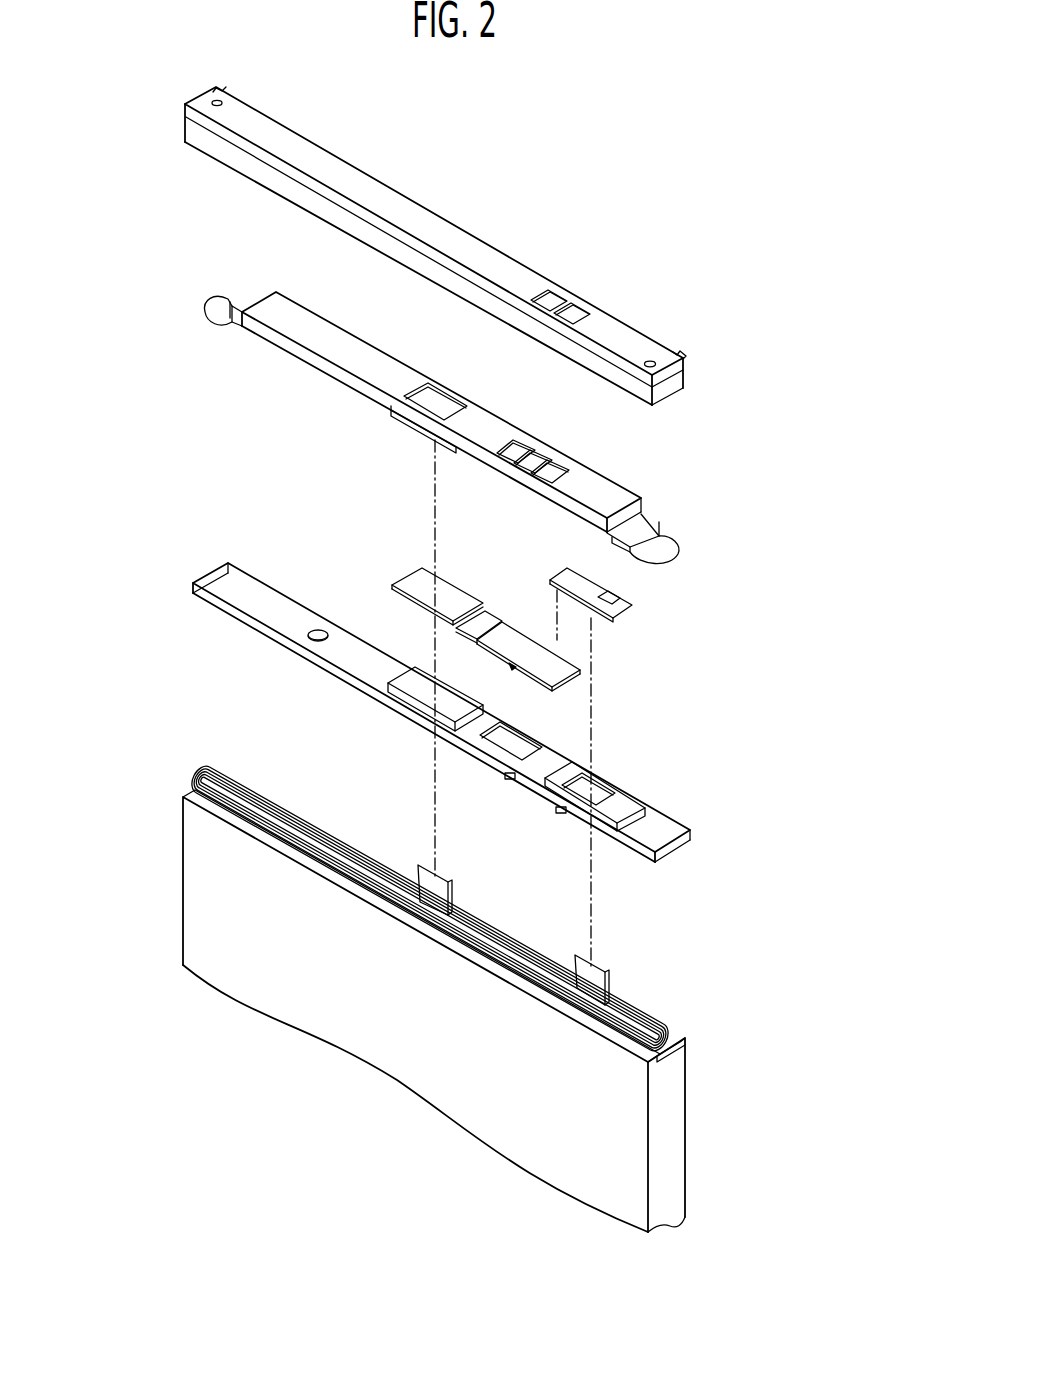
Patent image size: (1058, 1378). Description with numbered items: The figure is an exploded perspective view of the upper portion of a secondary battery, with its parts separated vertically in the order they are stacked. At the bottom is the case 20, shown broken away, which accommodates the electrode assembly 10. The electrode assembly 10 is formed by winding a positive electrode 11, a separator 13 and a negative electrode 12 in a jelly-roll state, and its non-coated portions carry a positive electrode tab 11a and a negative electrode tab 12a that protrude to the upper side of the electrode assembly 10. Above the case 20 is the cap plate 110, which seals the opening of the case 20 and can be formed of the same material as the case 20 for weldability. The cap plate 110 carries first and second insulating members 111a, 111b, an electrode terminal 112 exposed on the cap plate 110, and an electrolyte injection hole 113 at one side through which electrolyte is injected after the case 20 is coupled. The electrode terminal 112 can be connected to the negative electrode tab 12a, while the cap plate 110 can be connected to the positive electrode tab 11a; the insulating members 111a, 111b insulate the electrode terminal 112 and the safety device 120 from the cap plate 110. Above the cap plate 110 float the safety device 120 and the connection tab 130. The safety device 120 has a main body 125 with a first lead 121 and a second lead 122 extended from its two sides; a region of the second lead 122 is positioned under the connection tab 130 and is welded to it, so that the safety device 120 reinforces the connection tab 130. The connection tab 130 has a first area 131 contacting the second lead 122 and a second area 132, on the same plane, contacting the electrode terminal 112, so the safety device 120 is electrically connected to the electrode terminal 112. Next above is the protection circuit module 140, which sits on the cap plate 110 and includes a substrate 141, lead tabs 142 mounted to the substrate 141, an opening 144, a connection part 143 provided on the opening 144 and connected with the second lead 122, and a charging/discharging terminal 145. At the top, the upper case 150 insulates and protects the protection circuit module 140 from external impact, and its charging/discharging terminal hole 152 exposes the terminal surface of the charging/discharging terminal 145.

The electrode assembly 10 is at (489, 924).
The positive electrode 11 is at (672, 1022).
The positive electrode tab 11a is at (438, 890).
The negative electrode 12 is at (672, 1038).
The negative electrode tab 12a is at (596, 978).
The separator 13 is at (672, 1030).
The case 20 is at (677, 1160).
The cap plate 110 is at (477, 709).
The first insulating member 111a is at (623, 775).
The second insulating member 111b is at (412, 690).
The electrode terminal 112 is at (603, 788).
The electrolyte injection hole 113 is at (322, 628).
The safety device 120 is at (533, 616).
The first lead 121 is at (452, 596).
The second lead 122 is at (568, 668).
The main body 125 is at (505, 632).
The connection tab 130 is at (630, 576).
The first area 131 is at (562, 578).
The second area 132 is at (612, 598).
The protection circuit module 140 is at (488, 396).
The substrate 141 is at (618, 492).
The lead tabs 142 is at (225, 300).
The connection part 143 is at (395, 432).
The opening 144 is at (435, 392).
The charging/discharging terminal 145 is at (518, 442).
The upper case 150 is at (483, 246).
The charging/discharging terminal hole 152 is at (575, 295).